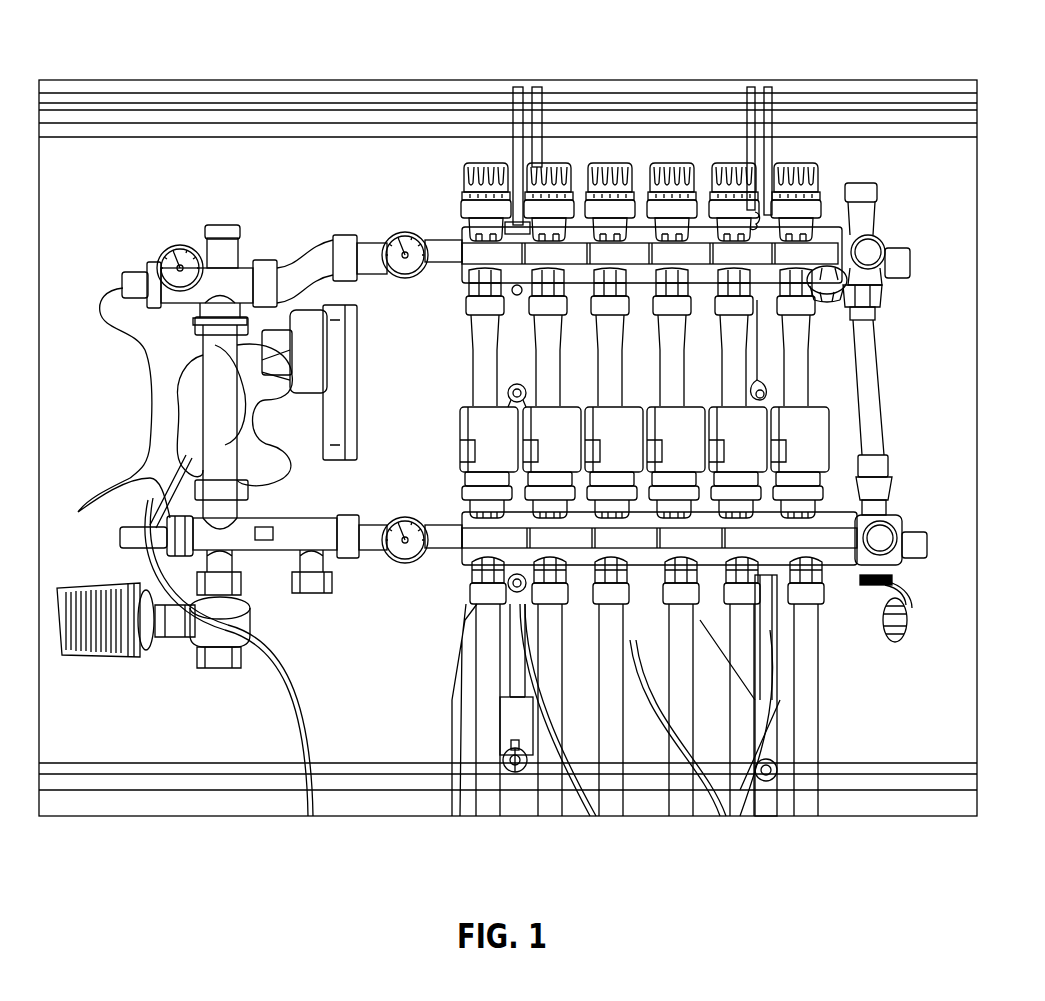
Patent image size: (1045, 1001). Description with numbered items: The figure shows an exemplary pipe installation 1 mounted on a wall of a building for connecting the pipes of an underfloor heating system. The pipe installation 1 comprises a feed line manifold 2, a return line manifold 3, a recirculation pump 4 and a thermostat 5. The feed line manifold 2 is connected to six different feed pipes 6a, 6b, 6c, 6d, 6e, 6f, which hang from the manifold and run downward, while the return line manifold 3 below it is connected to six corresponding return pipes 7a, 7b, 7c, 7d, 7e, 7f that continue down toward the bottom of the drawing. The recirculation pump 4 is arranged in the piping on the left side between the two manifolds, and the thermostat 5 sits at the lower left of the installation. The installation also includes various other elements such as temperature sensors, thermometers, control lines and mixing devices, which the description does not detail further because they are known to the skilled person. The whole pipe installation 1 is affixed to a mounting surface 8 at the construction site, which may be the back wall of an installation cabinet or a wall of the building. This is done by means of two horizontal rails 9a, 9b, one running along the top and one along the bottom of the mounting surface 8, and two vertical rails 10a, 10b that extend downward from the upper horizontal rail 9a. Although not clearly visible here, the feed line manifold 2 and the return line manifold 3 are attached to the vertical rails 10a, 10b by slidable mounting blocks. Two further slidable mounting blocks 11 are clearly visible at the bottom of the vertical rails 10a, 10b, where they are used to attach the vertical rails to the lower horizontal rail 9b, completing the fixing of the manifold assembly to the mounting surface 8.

The pipe installation 1 is at (247, 190).
The feed line manifold 2 is at (870, 224).
The return line manifold 3 is at (890, 512).
The recirculation pump 4 is at (355, 340).
The thermostat 5 is at (115, 660).
The feed pipe 6a is at (493, 393).
The feed pipe 6b is at (554, 393).
The feed pipe 6c is at (617, 393).
The feed pipe 6d is at (675, 393).
The feed pipe 6e is at (733, 393).
The feed pipe 6f is at (796, 393).
The return pipe 7a is at (494, 663).
The return pipe 7b is at (558, 663).
The return pipe 7c is at (622, 663).
The return pipe 7d is at (686, 663).
The return pipe 7e is at (748, 663).
The return pipe 7f is at (812, 663).
The mounting surface 8 is at (880, 715).
The horizontal rail 9a is at (960, 100).
The horizontal rail 9b is at (957, 778).
The vertical rail 10a is at (537, 86).
The vertical rail 10b is at (768, 86).
The slidable mounting block 11 is at (505, 757).